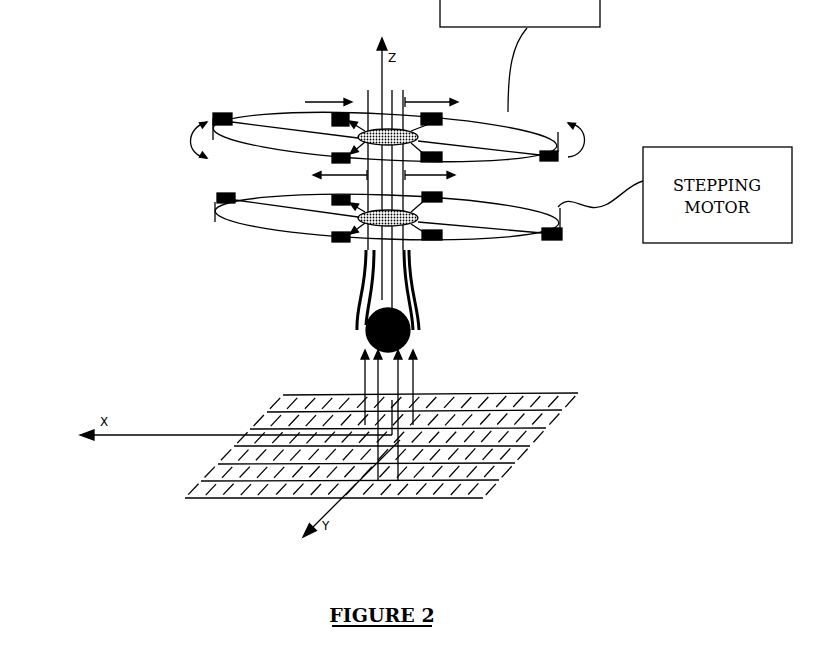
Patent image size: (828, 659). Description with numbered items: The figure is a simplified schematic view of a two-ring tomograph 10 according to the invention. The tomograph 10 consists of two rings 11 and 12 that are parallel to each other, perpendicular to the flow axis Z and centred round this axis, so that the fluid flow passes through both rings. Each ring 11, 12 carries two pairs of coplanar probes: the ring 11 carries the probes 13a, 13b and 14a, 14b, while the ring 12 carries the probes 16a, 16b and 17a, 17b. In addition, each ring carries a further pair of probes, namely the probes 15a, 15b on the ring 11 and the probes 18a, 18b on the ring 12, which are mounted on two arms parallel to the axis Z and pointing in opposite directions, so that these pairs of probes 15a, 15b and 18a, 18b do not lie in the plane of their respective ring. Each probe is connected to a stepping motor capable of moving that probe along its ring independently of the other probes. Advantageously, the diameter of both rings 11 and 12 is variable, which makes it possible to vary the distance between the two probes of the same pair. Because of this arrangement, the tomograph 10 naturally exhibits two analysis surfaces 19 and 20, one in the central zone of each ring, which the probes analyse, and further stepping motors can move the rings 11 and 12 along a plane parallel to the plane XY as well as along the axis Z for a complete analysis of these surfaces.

The tomograph 10 is at (594, 90).
The ring 11 is at (285, 242).
The ring 12 is at (247, 158).
The coplanar probe 13a is at (342, 243).
The coplanar probe 13b is at (442, 197).
The coplanar probe 14a is at (438, 242).
The coplanar probe 14b is at (332, 200).
The probe 15a is at (217, 201).
The probe 15b is at (562, 234).
The coplanar probe 16a is at (329, 149).
The coplanar probe 16b is at (435, 108).
The coplanar probe 17a is at (445, 158).
The coplanar probe 17b is at (342, 108).
The probe 18a is at (213, 118).
The probe 18b is at (558, 157).
The analysis surface 19 is at (424, 134).
The analysis surface 20 is at (420, 223).